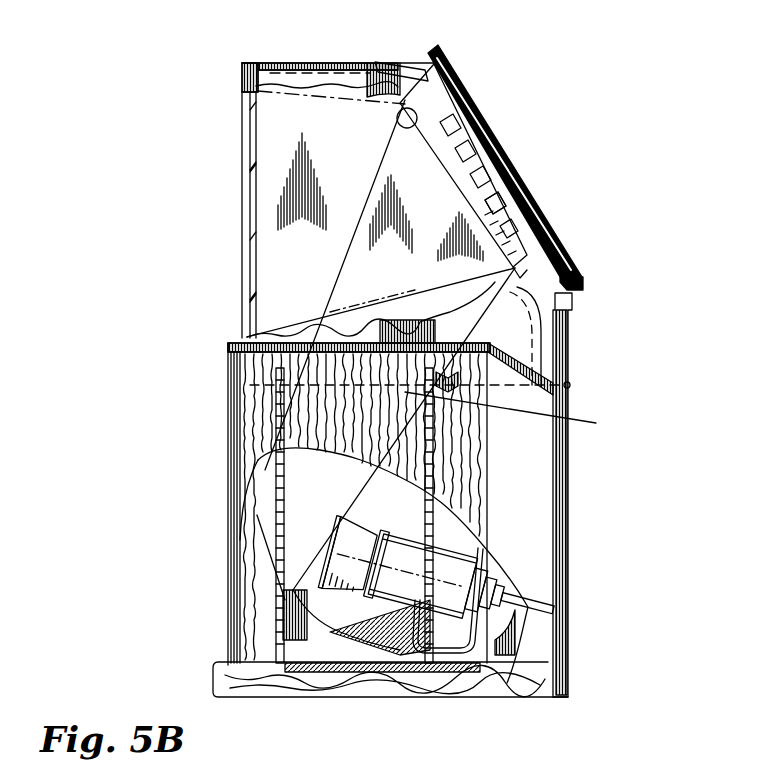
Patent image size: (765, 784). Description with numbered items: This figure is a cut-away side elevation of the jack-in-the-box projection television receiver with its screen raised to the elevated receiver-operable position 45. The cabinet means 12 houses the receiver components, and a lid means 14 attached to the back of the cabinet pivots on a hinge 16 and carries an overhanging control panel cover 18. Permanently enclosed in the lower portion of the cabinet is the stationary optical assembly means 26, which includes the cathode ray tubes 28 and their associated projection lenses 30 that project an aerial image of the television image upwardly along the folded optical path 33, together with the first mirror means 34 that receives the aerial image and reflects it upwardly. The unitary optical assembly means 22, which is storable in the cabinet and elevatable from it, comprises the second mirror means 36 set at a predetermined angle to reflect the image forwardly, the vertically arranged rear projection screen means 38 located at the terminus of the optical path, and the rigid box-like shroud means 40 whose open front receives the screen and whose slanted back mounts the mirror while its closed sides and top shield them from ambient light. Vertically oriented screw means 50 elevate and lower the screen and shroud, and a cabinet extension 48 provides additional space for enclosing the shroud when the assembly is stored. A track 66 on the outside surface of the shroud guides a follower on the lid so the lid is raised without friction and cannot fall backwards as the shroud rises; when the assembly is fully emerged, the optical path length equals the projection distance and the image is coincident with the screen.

The cabinet means 12 is at (232, 580).
The lid means 14 is at (491, 127).
The hinge 16 is at (570, 385).
The control panel cover 18 is at (395, 62).
The unitary optical assembly means 22 is at (237, 95).
The stationary optical assembly means 26 is at (262, 615).
The cathode ray tubes 28 is at (503, 655).
The projection lenses 30 is at (410, 655).
The optical path 33 is at (516, 414).
The first mirror means 34 is at (415, 537).
The mirror means 36 is at (412, 98).
The rear projection screen means 38 is at (247, 271).
The shroud means 40 is at (313, 63).
The elevated receiver-operable position 45 is at (238, 197).
The cabinet extension 48 is at (560, 666).
The screw means 50 is at (277, 428).
The track 66 is at (491, 153).